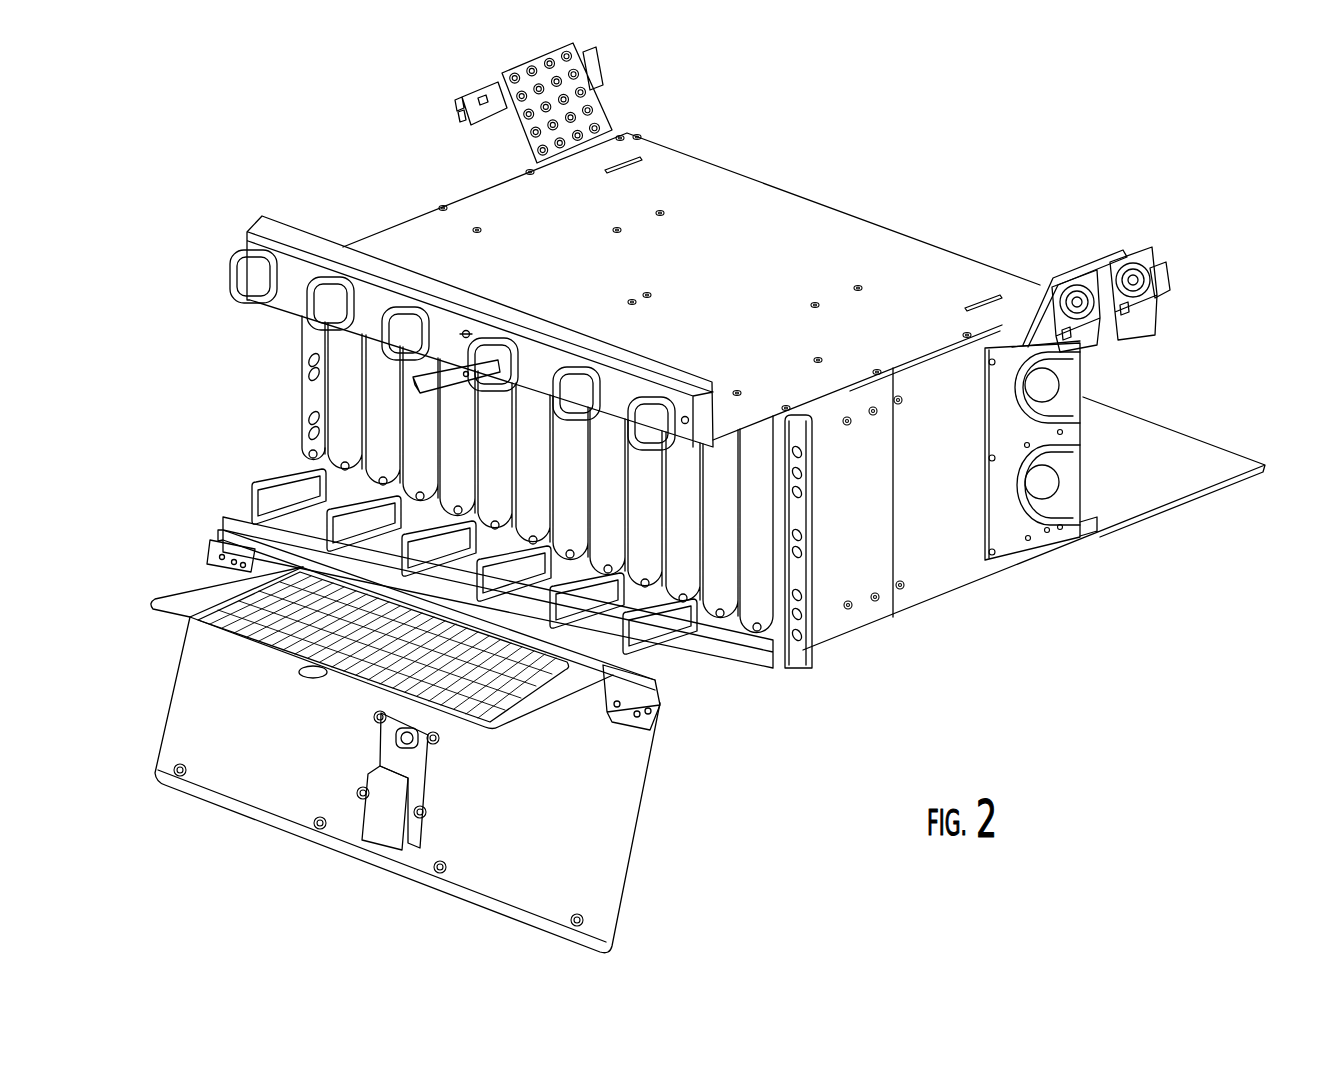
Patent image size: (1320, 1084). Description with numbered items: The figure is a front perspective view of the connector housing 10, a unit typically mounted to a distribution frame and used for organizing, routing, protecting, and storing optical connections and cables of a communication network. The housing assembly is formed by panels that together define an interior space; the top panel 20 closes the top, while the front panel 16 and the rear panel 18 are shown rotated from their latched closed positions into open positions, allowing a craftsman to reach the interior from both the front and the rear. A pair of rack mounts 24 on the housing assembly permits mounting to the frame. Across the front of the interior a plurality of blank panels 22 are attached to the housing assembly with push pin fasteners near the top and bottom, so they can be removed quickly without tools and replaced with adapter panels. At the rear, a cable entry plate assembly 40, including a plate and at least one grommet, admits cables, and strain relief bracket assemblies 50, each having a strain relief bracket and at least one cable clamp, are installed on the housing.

The connector housing 10 is at (283, 176).
The front panel 16 is at (597, 817).
The rear panel 18 is at (1182, 484).
The top panel 20 is at (753, 222).
The blank panels 22 is at (748, 603).
The rack mounts 24 is at (800, 668).
The cable entry plate assembly 40 is at (1010, 538).
The strain relief bracket assembly 50 is at (1096, 252).